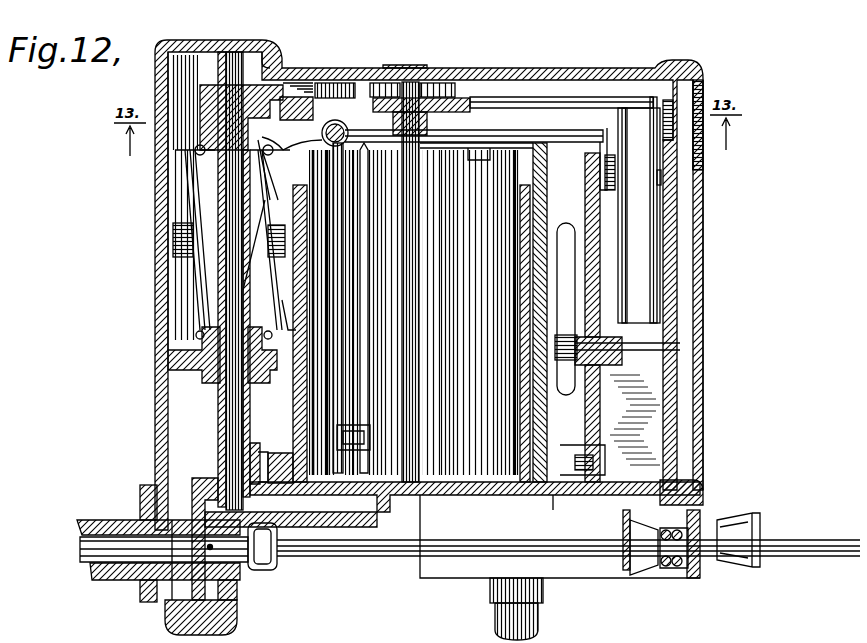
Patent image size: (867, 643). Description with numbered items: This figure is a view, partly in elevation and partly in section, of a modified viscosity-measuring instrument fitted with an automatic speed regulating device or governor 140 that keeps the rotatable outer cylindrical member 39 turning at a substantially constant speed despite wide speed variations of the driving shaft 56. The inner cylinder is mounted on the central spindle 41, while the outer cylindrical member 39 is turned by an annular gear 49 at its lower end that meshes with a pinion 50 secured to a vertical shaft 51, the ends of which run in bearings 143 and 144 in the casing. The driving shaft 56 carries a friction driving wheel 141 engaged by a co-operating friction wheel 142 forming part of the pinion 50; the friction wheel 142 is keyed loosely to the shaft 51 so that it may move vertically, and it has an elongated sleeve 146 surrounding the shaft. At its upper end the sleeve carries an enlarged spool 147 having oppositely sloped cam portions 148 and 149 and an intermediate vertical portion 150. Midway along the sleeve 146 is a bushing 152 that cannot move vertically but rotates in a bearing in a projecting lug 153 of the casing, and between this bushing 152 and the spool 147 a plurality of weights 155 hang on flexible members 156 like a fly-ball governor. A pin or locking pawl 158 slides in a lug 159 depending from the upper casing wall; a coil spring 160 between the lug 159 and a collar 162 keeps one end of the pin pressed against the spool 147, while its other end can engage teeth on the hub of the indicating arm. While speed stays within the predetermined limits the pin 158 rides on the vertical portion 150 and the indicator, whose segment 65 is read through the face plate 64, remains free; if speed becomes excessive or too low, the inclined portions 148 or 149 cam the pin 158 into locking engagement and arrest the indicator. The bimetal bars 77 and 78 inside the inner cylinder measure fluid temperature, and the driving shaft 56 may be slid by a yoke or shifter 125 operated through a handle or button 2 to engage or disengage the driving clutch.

The handle or button 2 is at (760, 531).
The outer cylindrical member 39 is at (263, 322).
The spindle 41 is at (414, 335).
The annular gear 49 is at (281, 455).
The pinion 50 is at (263, 452).
The vertical shaft 51 is at (223, 416).
The driving shaft 56 is at (102, 545).
The face plate or dial 64 is at (668, 242).
The curved plate or segment 65 is at (645, 297).
The bar 77 is at (336, 158).
The bar 78 is at (365, 179).
The yoke or shifter 125 is at (268, 568).
The cam mechanism 140 is at (205, 303).
The friction driving wheel 141 is at (192, 500).
The friction wheel 142 is at (475, 468).
The bearing 143 is at (238, 45).
The bearing 144 is at (345, 498).
The elongated sleeve 146 is at (243, 290).
The spool 147 is at (245, 95).
The cam portion 148 is at (263, 96).
The cam portion 149 is at (284, 152).
The intermediate vertical portion 150 is at (322, 133).
The bushing 152 is at (198, 343).
The projecting lug 153 is at (198, 376).
The weights 155 is at (175, 238).
The flexible members 156 is at (196, 194).
The pin or locking pawl 158 is at (385, 86).
The lug 159 is at (357, 78).
The coil spring 160 is at (325, 80).
The collar 162 is at (302, 96).